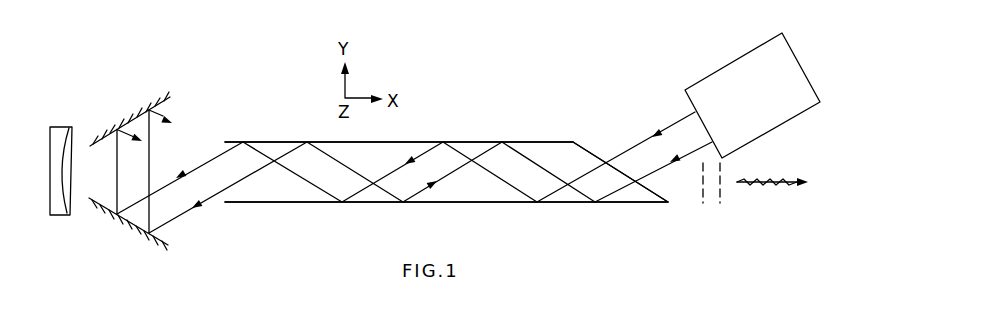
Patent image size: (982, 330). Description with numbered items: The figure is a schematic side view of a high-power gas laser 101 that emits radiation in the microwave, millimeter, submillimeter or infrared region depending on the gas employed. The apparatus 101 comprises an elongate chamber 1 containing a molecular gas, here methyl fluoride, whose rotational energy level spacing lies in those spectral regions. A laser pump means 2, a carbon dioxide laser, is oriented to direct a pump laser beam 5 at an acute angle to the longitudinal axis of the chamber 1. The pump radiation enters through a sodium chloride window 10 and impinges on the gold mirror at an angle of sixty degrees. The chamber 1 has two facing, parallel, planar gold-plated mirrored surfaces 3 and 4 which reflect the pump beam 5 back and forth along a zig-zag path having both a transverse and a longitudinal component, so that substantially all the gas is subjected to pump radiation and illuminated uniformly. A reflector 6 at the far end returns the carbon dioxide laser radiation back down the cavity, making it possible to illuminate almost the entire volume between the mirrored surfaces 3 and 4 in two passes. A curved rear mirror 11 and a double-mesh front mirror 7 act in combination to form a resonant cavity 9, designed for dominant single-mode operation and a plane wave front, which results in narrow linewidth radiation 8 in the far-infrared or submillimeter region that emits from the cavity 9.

The elongate chamber 1 is at (452, 143).
The laser pump means 2 is at (804, 72).
The mirrored surface 3 is at (480, 195).
The mirrored surface 4 is at (521, 147).
The pump laser beam 5 is at (672, 126).
The reflector 6 is at (170, 100).
The double-mesh front mirror 7 is at (720, 200).
The narrow linewidth radiation 8 is at (778, 183).
The resonant cavity 9 is at (392, 157).
The NaCl window 10 is at (655, 193).
The curved rear mirror 11 is at (54, 123).
The high-power gas laser 101 is at (311, 249).